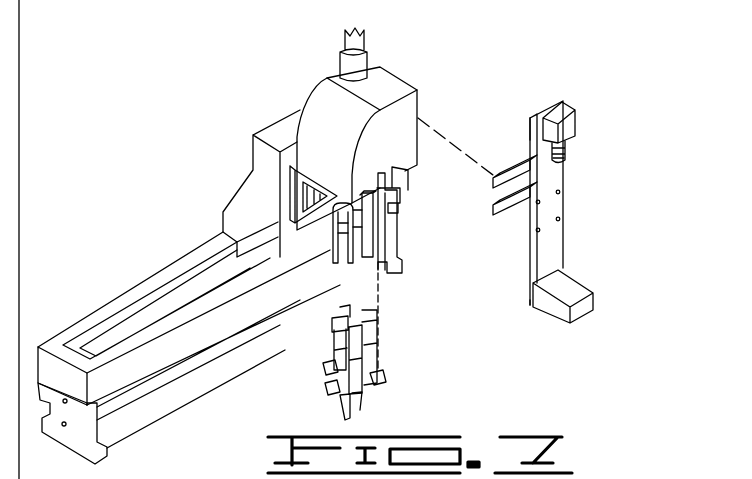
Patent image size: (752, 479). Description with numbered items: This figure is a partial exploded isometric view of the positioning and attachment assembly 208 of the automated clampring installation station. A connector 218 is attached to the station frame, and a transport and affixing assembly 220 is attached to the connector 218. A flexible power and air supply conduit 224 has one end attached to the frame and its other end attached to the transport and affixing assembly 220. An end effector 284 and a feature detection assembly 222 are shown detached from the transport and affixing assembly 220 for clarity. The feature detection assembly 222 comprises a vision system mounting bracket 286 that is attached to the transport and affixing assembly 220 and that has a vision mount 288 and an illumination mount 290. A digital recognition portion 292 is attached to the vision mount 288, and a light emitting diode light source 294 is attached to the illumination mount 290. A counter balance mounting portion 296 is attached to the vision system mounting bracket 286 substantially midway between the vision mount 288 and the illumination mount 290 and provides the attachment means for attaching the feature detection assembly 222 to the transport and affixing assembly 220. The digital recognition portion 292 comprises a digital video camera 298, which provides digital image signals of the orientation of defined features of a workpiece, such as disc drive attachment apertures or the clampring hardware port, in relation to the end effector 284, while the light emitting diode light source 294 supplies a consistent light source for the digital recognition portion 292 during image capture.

The positioning and attachment assembly 208 is at (306, 70).
The connector 218 is at (77, 432).
The transport and affixing assembly 220 is at (402, 78).
The flexible power and air supply conduit 224 is at (363, 36).
The end effector 284 is at (402, 251).
The vision system mounting bracket 286 is at (565, 213).
The vision mount 288 is at (538, 130).
The feature detection assembly 222 is at (571, 110).
The digital recognition portion 292 is at (575, 136).
The digital video camera 298 is at (567, 157).
The light emitting diode light source 294 is at (580, 284).
The counter balance mounting portion 296 is at (510, 178).
The illumination mount 290 is at (520, 292).